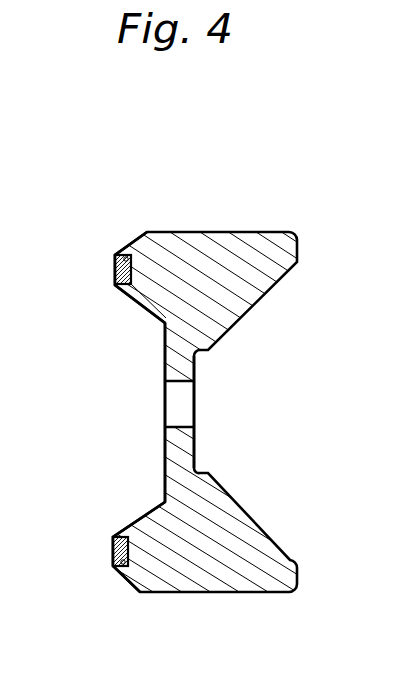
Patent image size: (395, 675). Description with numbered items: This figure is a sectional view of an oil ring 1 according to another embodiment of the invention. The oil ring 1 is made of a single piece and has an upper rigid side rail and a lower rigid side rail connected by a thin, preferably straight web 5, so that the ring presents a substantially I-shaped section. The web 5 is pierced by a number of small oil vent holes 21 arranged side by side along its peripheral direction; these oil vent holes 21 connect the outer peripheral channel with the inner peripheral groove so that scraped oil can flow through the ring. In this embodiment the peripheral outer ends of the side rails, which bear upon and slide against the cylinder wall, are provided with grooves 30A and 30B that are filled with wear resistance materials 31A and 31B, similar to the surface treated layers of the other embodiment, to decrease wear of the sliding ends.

The oil ring 1 is at (270, 239).
The web 5 is at (167, 453).
The oil vent holes 21 is at (188, 402).
The groove 30A is at (128, 259).
The groove 30B is at (125, 562).
The wear resistance material 31A is at (114, 267).
The wear resistance material 31B is at (112, 565).